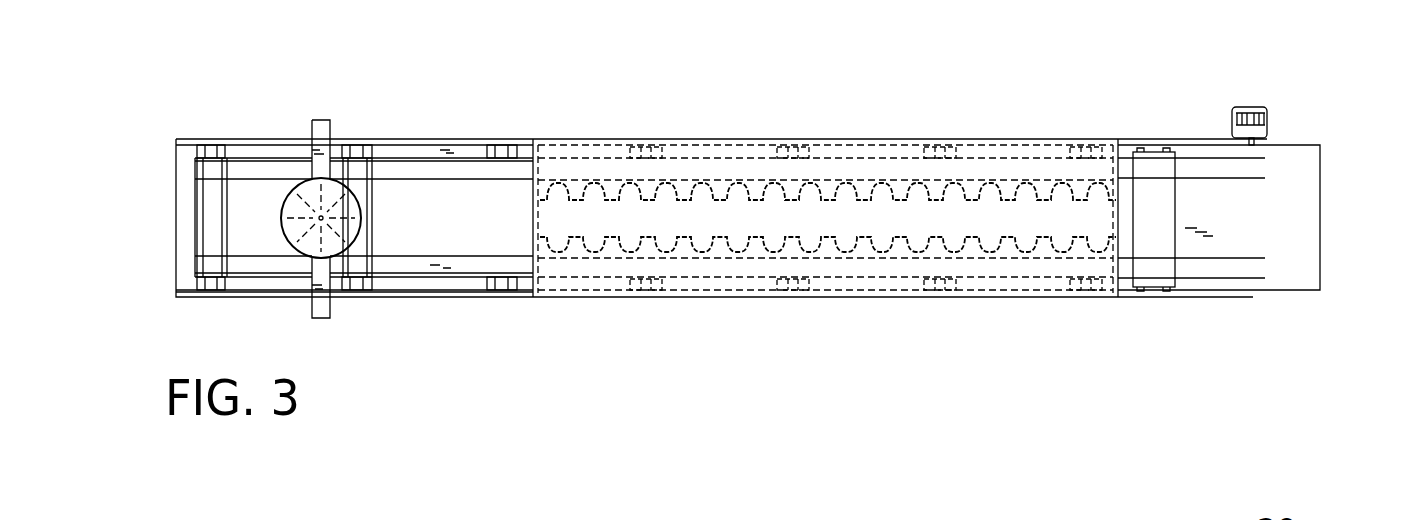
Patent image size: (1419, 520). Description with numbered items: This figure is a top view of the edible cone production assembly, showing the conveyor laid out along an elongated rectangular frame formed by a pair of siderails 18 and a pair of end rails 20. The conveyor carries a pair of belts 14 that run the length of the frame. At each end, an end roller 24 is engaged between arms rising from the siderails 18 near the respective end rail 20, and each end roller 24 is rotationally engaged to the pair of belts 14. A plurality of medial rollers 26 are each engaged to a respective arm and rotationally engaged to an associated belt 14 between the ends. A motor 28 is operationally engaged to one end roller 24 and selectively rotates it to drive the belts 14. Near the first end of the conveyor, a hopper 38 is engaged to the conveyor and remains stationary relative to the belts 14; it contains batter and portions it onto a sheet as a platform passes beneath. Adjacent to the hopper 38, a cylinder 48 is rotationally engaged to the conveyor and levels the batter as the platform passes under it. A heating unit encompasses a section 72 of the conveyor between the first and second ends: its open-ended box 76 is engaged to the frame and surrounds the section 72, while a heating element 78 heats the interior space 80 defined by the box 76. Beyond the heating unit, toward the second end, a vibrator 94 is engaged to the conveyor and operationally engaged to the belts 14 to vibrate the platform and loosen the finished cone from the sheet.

The belts 14 is at (457, 262).
The siderails 18 is at (254, 147).
The end rails 20 is at (176, 158).
The end rollers 24 is at (200, 222).
The medial rollers 26 is at (519, 270).
The motor 28 is at (1270, 115).
The hopper 38 is at (317, 188).
The cylinder 48 is at (364, 172).
The section 72 is at (1110, 219).
The box 76 is at (747, 136).
The heating element 78 is at (827, 195).
The interior space 80 is at (885, 216).
The vibrator 94 is at (1153, 220).